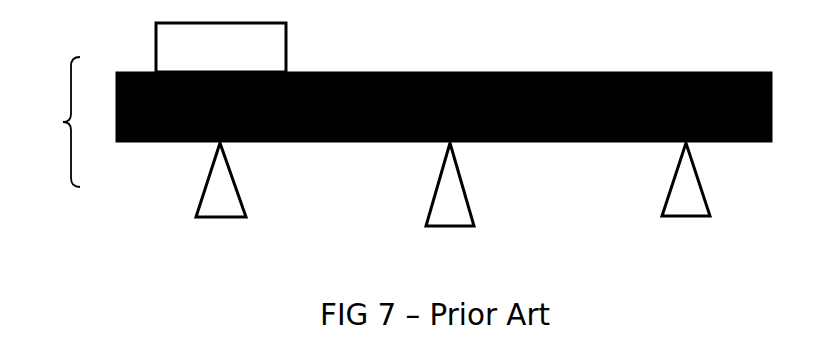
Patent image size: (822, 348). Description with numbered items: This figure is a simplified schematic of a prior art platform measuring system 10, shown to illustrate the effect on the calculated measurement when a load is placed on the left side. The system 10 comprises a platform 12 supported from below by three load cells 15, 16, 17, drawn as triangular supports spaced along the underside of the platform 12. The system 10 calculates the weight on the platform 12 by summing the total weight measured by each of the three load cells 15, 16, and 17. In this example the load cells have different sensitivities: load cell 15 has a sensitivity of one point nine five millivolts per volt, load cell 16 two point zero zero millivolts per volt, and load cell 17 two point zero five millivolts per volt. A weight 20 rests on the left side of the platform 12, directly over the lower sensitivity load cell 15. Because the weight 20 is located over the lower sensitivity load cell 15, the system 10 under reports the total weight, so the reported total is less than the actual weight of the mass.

The platform measuring system 10 is at (47, 122).
The platform 12 is at (564, 148).
The load cell 15 is at (221, 180).
The load cell 16 is at (450, 184).
The load cell 17 is at (686, 179).
The weight 20 is at (221, 47).